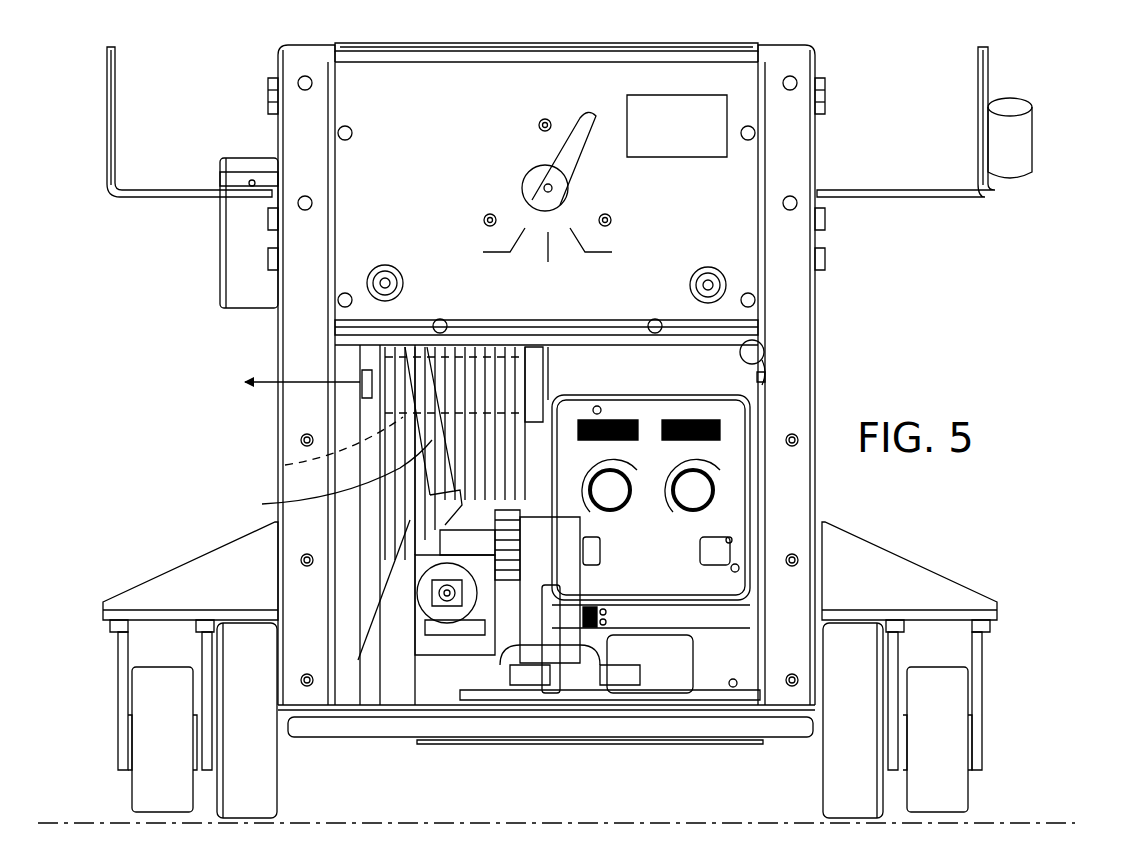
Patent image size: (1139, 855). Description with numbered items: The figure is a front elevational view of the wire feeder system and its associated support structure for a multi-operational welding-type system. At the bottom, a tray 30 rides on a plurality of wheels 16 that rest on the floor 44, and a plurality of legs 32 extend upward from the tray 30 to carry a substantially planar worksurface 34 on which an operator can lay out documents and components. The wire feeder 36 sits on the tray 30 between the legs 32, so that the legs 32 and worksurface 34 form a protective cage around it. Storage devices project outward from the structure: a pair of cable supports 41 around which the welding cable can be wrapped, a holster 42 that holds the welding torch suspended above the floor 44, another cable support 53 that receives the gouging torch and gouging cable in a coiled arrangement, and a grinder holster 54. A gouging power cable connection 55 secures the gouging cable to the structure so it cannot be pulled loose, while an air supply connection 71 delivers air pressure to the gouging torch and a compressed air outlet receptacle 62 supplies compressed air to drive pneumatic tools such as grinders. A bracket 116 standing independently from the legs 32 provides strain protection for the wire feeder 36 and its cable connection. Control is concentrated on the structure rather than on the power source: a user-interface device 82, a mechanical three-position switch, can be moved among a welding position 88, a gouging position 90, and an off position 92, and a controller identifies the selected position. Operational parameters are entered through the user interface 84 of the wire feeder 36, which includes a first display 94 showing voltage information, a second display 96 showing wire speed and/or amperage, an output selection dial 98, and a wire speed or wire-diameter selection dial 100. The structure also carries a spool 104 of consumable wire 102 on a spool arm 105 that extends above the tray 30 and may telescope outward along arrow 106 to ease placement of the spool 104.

The wheels 16 is at (132, 790).
The tray 30 is at (415, 717).
The legs 32 is at (815, 388).
The worksurface 34 is at (520, 43).
The wire feeder 36 is at (720, 685).
The cable supports 41 is at (1000, 70).
The holster 42 is at (1027, 140).
The floor 44 is at (570, 822).
The cable support 53 is at (107, 115).
The grinder holster 54 is at (220, 245).
The gouging power cable connection 55 is at (768, 352).
The compressed air outlet receptacle 62 is at (378, 272).
The air supply connection 71 is at (712, 268).
The user-interface device 82 is at (553, 155).
The user interface 84 is at (742, 466).
The welding position 88 is at (545, 290).
The gouging position 90 is at (412, 235).
The off position 92 is at (640, 235).
The first display 94 is at (585, 420).
The second display 96 is at (688, 420).
The output selection dial 98 is at (612, 504).
The wire speed or wire-diameter selection dial 100 is at (688, 504).
The consumable wire 102 is at (380, 432).
The spool 104 is at (327, 479).
The spool arm 105 is at (287, 464).
The arrow 106 is at (275, 380).
The bracket 116 is at (385, 692).